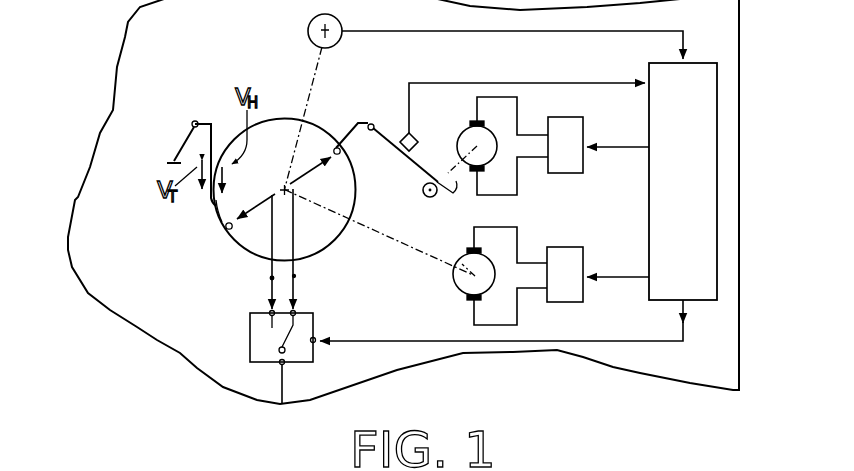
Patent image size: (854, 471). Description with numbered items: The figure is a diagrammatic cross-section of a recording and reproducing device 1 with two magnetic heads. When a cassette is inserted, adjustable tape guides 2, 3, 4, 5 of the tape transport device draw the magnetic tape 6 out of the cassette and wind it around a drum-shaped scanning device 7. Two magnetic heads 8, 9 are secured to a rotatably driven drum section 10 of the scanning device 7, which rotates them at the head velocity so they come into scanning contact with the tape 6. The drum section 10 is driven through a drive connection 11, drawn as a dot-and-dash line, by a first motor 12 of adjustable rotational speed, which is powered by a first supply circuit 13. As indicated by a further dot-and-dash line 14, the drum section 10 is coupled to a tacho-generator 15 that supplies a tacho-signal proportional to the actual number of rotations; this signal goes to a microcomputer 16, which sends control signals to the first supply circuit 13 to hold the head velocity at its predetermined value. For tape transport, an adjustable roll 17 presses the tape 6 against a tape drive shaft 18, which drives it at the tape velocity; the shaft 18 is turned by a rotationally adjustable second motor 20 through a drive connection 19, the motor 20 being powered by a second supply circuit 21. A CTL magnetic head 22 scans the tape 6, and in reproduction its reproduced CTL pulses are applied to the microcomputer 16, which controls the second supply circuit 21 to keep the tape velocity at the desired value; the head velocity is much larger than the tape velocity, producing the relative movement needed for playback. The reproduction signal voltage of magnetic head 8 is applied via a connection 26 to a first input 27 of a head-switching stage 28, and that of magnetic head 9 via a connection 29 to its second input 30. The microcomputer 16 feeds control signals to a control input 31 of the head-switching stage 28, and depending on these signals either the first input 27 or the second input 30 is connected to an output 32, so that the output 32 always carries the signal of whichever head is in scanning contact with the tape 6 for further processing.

The recording and reproducing device 1 is at (110, 108).
The adjustable tape guide 2 is at (193, 122).
The adjustable tape guide 3 is at (210, 122).
The adjustable tape guide 4 is at (362, 128).
The adjustable tape guide 5 is at (374, 130).
The magnetic tape 6 is at (185, 140).
The drum-shaped scanning device 7 is at (279, 112).
The magnetic head 8 is at (227, 228).
The magnetic head 9 is at (336, 147).
The rotatably driven drum section 10 is at (221, 210).
The drive connection 11 is at (422, 252).
The first motor 12 is at (462, 289).
The first supply circuit 13 is at (577, 257).
The dot-and-dash line 14 is at (316, 66).
The tacho-generator 15 is at (337, 43).
The microcomputer 16 is at (703, 73).
The adjustable roll 17 is at (427, 198).
The tape drive shaft 18 is at (440, 182).
The drive connection 19 is at (447, 168).
The second motor 20 is at (470, 132).
The second supply circuit 21 is at (582, 128).
The CTL magnetic head 22 is at (408, 132).
The connection 26 is at (270, 278).
The first input 27 is at (269, 313).
The head-switching stage 28 is at (256, 342).
The connection 29 is at (296, 276).
The second input 30 is at (296, 314).
The control input 31 is at (318, 337).
The output 32 is at (284, 364).